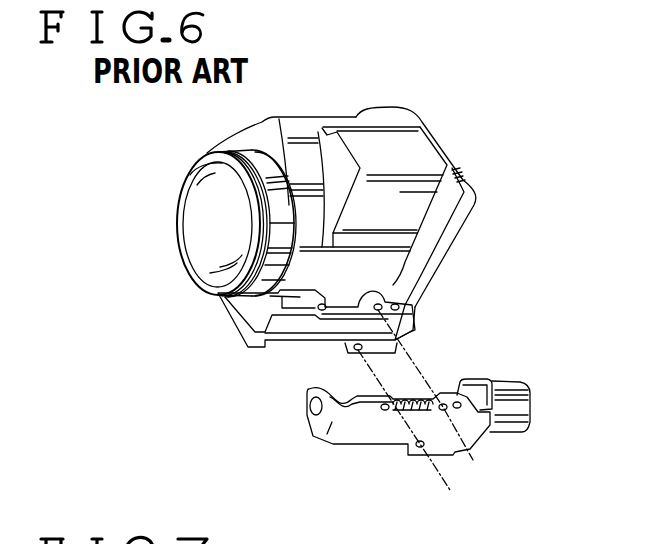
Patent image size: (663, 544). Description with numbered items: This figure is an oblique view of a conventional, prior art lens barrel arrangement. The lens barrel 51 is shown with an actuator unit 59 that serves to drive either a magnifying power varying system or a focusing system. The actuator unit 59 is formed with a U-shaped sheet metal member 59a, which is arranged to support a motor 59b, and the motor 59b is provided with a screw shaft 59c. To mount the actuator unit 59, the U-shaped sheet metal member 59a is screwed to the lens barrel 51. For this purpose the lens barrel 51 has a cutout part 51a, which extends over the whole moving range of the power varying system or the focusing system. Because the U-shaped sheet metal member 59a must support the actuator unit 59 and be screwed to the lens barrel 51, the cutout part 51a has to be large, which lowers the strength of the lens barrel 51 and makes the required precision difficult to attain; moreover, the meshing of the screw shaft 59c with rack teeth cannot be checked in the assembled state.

The lens barrel 51 is at (423, 157).
The cutout part 51a is at (303, 323).
The actuator unit 59 is at (492, 497).
The U-shaped sheet metal member 59a is at (377, 422).
The motor 59b is at (517, 392).
The screw shaft 59c is at (413, 395).